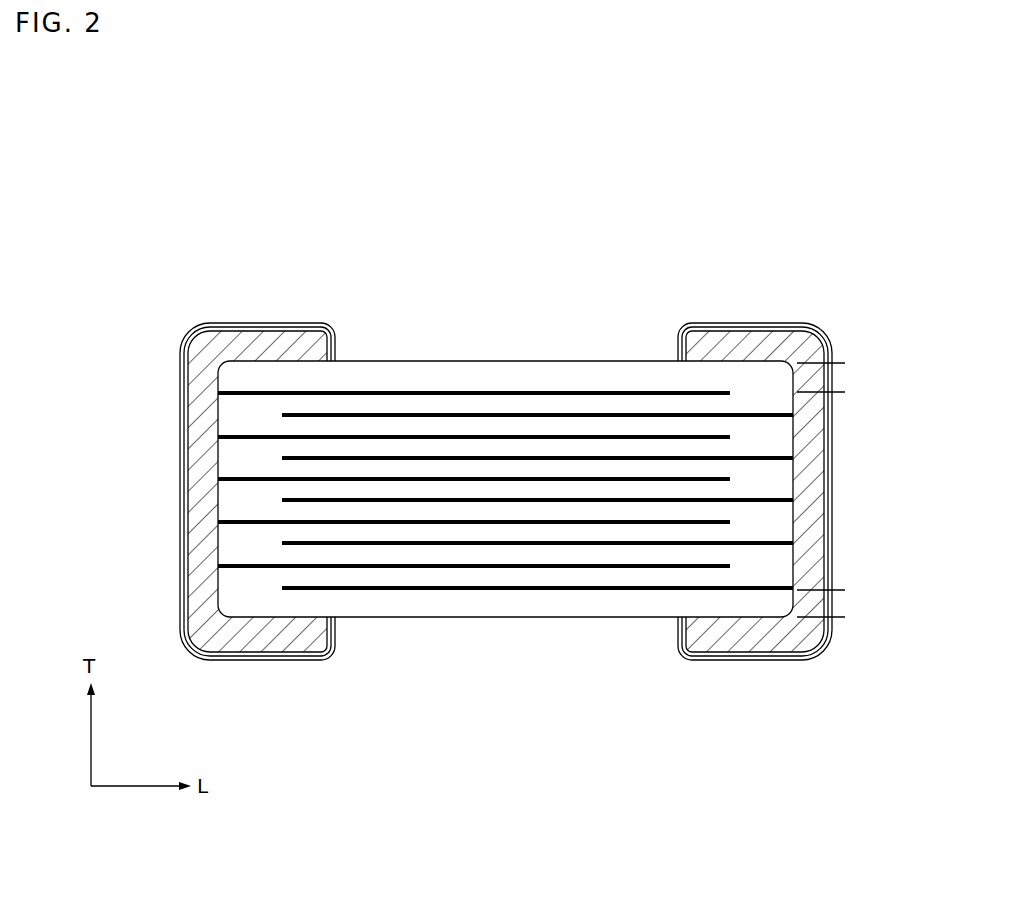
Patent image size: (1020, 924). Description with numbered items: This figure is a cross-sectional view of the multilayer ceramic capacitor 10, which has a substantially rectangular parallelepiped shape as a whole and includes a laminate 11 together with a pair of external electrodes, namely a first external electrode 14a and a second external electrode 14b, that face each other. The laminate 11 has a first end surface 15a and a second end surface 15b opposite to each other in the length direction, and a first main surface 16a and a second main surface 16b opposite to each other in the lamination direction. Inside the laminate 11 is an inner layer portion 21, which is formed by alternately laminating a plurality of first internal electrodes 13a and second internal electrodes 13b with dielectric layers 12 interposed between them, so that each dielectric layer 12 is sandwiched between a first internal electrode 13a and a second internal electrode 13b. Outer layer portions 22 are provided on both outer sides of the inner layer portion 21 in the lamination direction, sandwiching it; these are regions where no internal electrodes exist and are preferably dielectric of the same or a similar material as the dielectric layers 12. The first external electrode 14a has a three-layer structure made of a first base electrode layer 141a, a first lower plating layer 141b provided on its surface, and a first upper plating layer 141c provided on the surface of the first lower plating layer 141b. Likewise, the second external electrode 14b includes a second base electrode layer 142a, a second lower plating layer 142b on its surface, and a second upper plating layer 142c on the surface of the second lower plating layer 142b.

The multilayer ceramic capacitor 10 is at (398, 286).
The laminate 11 is at (552, 356).
The dielectric layer 12 is at (557, 507).
The first internal electrode 13a is at (415, 478).
The second internal electrode 13b is at (390, 502).
The first external electrode 14a is at (86, 517).
The second external electrode 14b is at (805, 728).
The first base electrode layer 141a is at (207, 529).
The first lower plating layer 141b is at (185, 553).
The first upper plating layer 141c is at (181, 577).
The second base electrode layer 142a is at (690, 651).
The second lower plating layer 142b is at (730, 656).
The second upper plating layer 142c is at (784, 659).
The first end surface 15a is at (217, 415).
The second end surface 15b is at (799, 595).
The first main surface 16a is at (478, 360).
The second main surface 16b is at (452, 619).
The inner layer portion 21 is at (860, 392).
The outer layer portion 22 is at (860, 363).